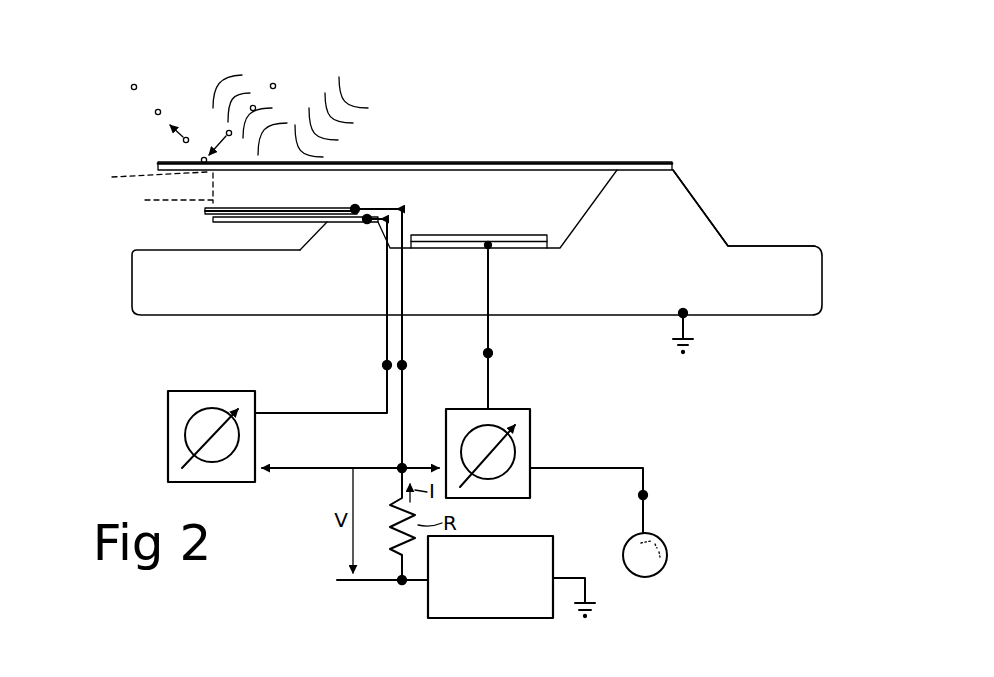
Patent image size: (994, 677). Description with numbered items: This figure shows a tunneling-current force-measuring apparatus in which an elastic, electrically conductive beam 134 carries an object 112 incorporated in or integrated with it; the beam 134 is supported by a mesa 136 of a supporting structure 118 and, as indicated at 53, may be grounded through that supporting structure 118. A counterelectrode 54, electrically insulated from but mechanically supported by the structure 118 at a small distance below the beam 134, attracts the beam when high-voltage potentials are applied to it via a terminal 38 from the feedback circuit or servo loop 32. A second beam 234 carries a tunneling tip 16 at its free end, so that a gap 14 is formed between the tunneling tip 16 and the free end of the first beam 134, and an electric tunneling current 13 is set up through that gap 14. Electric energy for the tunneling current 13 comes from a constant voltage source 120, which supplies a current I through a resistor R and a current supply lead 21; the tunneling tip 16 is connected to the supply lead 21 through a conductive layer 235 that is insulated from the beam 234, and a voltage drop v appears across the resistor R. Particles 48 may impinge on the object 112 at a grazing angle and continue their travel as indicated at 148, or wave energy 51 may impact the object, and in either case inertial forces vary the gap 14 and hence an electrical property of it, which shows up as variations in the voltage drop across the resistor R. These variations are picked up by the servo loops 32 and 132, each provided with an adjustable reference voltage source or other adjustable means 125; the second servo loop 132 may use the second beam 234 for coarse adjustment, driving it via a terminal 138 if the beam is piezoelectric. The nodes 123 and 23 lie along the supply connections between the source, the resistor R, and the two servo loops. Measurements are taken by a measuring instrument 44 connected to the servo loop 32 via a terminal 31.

The electric tunneling current 13 is at (150, 183).
The gap 14 is at (205, 183).
The tunneling tip 16 is at (231, 283).
The current supply lead 21 is at (405, 385).
The connection node 23 is at (419, 465).
The terminal 31 is at (647, 495).
The feedback circuit or servo loop 32 is at (532, 413).
The terminal 38 is at (491, 352).
The measuring instrument 44 is at (667, 565).
The particles 48 is at (255, 105).
The wave energy 51 is at (346, 110).
The ground connection 53 is at (688, 332).
The counterelectrode 54 is at (517, 235).
The object 112 is at (170, 162).
The supporting structure 118 is at (165, 272).
The constant voltage source 120 is at (553, 557).
The connection node 123 is at (377, 466).
The adjustable reference voltage source 125 is at (198, 464).
The feedback circuit or servo loop 132 is at (168, 431).
The beam 134 is at (594, 161).
The mesa 136 is at (703, 225).
The terminal 138 is at (383, 364).
The continued particle travel 148 is at (155, 112).
The second beam 234 is at (240, 210).
The conductive layer 235 is at (232, 208).